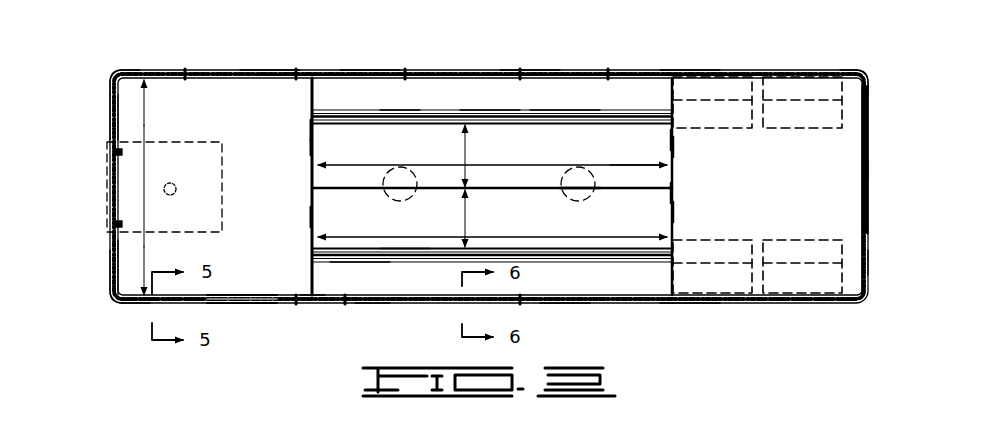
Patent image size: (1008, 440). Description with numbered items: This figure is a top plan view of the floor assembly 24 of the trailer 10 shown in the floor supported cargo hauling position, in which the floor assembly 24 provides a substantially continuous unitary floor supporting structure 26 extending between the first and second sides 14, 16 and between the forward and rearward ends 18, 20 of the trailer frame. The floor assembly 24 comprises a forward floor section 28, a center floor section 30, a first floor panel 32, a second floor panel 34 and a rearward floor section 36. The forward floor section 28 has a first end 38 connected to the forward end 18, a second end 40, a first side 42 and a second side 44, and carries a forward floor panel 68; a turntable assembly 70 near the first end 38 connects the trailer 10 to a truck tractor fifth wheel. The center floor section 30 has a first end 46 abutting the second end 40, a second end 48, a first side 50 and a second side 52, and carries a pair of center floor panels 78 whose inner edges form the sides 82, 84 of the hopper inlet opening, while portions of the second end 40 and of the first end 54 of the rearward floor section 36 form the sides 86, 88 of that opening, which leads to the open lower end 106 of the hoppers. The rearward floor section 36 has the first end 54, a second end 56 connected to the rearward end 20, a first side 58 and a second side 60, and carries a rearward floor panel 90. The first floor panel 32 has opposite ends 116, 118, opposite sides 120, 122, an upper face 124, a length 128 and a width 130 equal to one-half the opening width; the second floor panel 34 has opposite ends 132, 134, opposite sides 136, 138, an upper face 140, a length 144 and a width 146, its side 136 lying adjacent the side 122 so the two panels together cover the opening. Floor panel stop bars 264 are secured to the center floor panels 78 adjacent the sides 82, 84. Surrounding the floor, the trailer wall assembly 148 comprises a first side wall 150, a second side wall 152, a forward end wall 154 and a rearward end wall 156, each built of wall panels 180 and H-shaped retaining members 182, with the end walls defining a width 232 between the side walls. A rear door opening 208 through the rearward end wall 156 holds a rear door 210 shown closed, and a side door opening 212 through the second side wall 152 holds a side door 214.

The trailer 10 is at (569, 69).
The first side 14 is at (313, 76).
The second side 16 is at (308, 305).
The forward end 18 is at (110, 100).
The rearward end 20 is at (869, 118).
The floor assembly 24 is at (220, 97).
The floor supporting structure 26 is at (253, 97).
The forward floor section 28 is at (163, 78).
The center floor section 30 is at (413, 93).
The first floor panel 32 is at (508, 153).
The second floor panel 34 is at (497, 228).
The rearward floor section 36 is at (835, 164).
The first end 38 is at (114, 115).
The second end 40 is at (315, 136).
The first side 42 is at (160, 93).
The second side 44 is at (147, 307).
The first end 46 is at (312, 146).
The second end 48 is at (673, 167).
The first side 50 is at (478, 76).
The second side 52 is at (364, 304).
The first end 54 is at (671, 140).
The second end 56 is at (868, 96).
The first side 58 is at (757, 80).
The second side 60 is at (757, 292).
The forward floor panel 68 is at (204, 118).
The turntable assembly 70 is at (113, 262).
The center floor panels 78 is at (533, 82).
The side of opening 82 is at (396, 128).
The side of opening 84 is at (403, 250).
The side of opening 86 is at (315, 203).
The side of opening 88 is at (670, 193).
The rearward floor panel 90 is at (759, 183).
The open lower end 106 is at (385, 176).
The end of first floor panel 116 is at (311, 130).
The end of first floor panel 118 is at (673, 147).
The side of first floor panel 120 is at (543, 130).
The side of first floor panel 122 is at (544, 188).
The upper face 124 is at (493, 130).
The length 128 is at (442, 165).
The width 130 is at (463, 151).
The end of second floor panel 132 is at (312, 217).
The end of second floor panel 134 is at (673, 212).
The side of second floor panel 136 is at (640, 187).
The side of second floor panel 138 is at (603, 258).
The upper face 140 is at (368, 220).
The length 144 is at (612, 238).
The width 146 is at (465, 207).
The trailer wall assembly 148 is at (688, 69).
The first side wall 150 is at (369, 70).
The second side wall 152 is at (347, 306).
The forward end wall 154 is at (137, 235).
The rearward end wall 156 is at (873, 264).
The wall panels 180 is at (267, 70).
The H-shaped retaining members 182 is at (296, 70).
The rear door opening 208 is at (862, 222).
The rear door 210 is at (868, 169).
The side door opening 212 is at (212, 302).
The side door 214 is at (231, 306).
The width 232 is at (146, 169).
The floor panel stop bar 264 is at (337, 112).